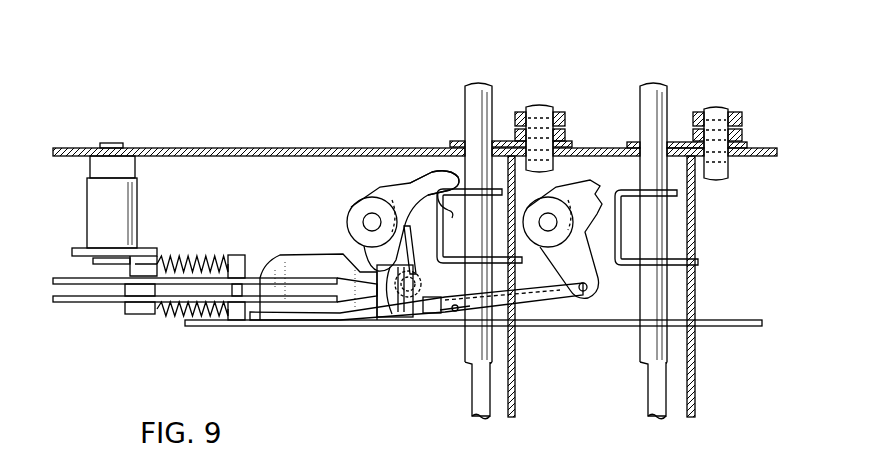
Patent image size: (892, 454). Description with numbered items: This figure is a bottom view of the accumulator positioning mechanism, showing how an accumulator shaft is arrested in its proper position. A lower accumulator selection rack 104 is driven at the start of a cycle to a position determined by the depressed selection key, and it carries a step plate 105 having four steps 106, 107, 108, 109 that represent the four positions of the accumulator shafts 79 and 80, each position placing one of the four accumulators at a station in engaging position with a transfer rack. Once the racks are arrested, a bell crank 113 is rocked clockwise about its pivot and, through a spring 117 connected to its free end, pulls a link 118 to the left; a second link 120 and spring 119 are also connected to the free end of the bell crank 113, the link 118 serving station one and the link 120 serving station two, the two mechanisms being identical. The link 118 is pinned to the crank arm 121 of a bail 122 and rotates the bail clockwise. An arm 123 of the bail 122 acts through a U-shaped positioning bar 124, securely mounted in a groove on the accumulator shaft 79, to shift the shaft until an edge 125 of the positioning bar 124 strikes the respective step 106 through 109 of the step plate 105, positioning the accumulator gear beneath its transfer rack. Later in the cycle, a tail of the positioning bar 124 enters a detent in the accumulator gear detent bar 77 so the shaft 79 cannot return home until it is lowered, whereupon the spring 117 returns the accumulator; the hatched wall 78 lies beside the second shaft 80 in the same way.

The accumulator gear detent bar 77 is at (516, 386).
The side wall 78 is at (696, 386).
The accumulator shaft 79 is at (474, 95).
The accumulator shaft 80 is at (651, 95).
The lower accumulator selection rack 104 is at (246, 326).
The step plate 105 is at (376, 316).
The step 106 is at (388, 303).
The step 107 is at (405, 300).
The step 108 is at (430, 297).
The step 109 is at (452, 312).
The bell crank 113 is at (74, 250).
The spring 117 is at (182, 257).
The link 118 is at (279, 262).
The spring 119 is at (162, 318).
The second link 120 is at (284, 322).
The crank arm 121 is at (410, 256).
The bail 122 is at (364, 194).
The arm 123 is at (409, 196).
The U-shaped positioning bar 124 is at (505, 191).
The edge 125 is at (455, 272).